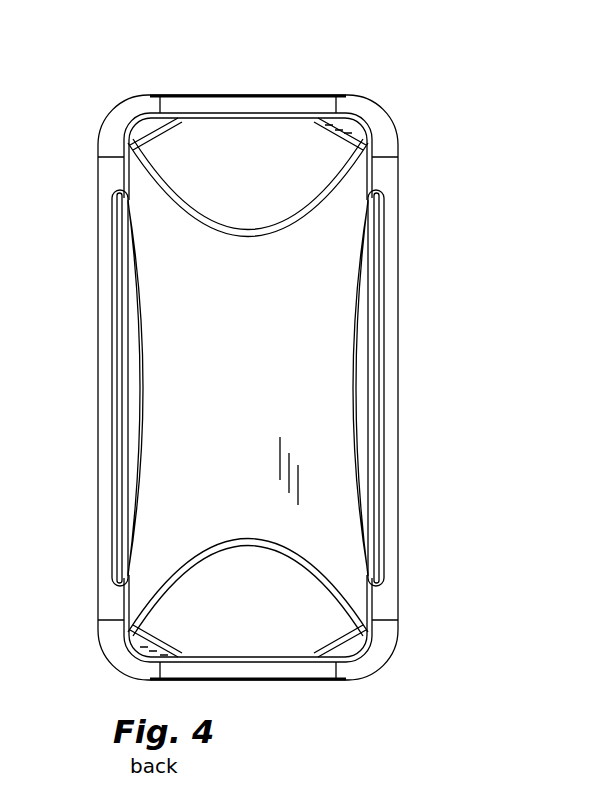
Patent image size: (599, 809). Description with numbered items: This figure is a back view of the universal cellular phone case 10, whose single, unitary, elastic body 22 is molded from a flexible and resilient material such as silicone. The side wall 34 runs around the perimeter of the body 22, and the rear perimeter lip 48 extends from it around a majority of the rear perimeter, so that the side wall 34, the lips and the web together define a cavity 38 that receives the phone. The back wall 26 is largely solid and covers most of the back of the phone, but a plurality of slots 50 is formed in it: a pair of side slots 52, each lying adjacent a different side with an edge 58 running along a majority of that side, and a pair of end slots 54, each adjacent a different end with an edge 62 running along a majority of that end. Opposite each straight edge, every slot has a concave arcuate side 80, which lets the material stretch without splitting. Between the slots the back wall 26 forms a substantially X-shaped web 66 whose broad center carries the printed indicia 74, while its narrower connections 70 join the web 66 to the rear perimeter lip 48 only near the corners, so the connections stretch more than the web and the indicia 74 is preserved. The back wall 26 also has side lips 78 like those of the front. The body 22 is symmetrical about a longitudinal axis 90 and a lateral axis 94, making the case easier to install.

The case 10 is at (401, 103).
The body 22 is at (400, 152).
The back wall 26 is at (335, 388).
The side wall 34 is at (552, 797).
The cavity 38 is at (494, 797).
The rear perimeter lip 48 is at (380, 530).
The slots 50 is at (373, 465).
The side slots 52 is at (370, 315).
The end slots 54 is at (279, 137).
The edge 58 is at (113, 408).
The edge 62 is at (210, 112).
The web 66 is at (197, 488).
The connections 70 is at (140, 183).
The indicia 74 is at (268, 355).
The side lips 78 is at (118, 463).
The concave arcuate side 80 is at (180, 206).
The longitudinal axis 90 is at (243, 73).
The lateral axis 94 is at (465, 382).